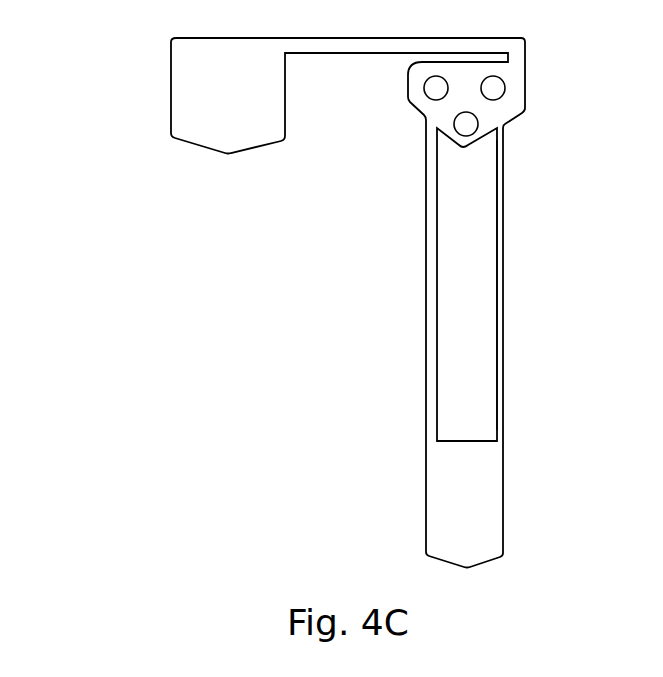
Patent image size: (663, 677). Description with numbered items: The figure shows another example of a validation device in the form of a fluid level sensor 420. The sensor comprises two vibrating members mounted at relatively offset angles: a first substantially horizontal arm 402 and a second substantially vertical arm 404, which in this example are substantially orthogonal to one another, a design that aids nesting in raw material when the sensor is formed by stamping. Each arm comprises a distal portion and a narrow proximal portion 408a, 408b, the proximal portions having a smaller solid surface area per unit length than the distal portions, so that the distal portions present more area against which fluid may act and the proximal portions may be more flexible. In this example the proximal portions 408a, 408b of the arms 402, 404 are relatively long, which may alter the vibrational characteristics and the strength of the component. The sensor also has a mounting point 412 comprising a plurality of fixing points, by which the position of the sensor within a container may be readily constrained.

The first substantially horizontal arm 402 is at (238, 120).
The second substantially vertical arm 404 is at (442, 513).
The proximal portion 408a is at (390, 53).
The proximal portion 408b is at (498, 300).
The mounting point 412 is at (467, 97).
The fluid level sensor 420 is at (155, 237).